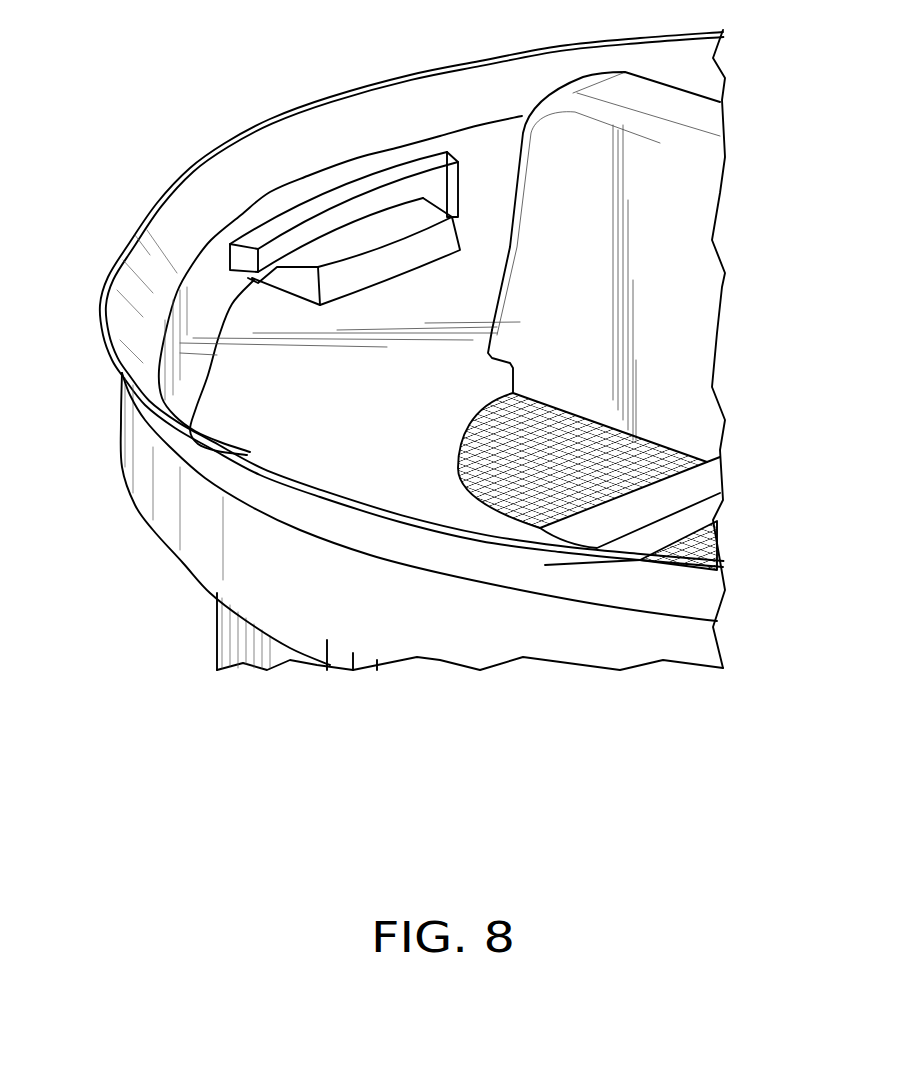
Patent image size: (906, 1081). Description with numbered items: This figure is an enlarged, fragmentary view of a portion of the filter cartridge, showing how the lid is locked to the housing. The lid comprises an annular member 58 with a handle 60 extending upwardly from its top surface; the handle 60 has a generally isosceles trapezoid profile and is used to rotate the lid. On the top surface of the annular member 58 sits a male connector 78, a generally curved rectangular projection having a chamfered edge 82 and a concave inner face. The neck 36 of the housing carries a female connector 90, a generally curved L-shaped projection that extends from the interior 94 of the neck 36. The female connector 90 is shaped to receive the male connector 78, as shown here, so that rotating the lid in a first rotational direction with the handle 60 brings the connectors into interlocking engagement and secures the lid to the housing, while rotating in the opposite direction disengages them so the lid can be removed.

The neck 36 is at (214, 187).
The annular member 58 is at (233, 437).
The handle 60 is at (695, 193).
The male connector 78 is at (455, 237).
The chamfered edge 82 is at (445, 175).
The female connector 90 is at (373, 200).
The interior 94 is at (177, 318).